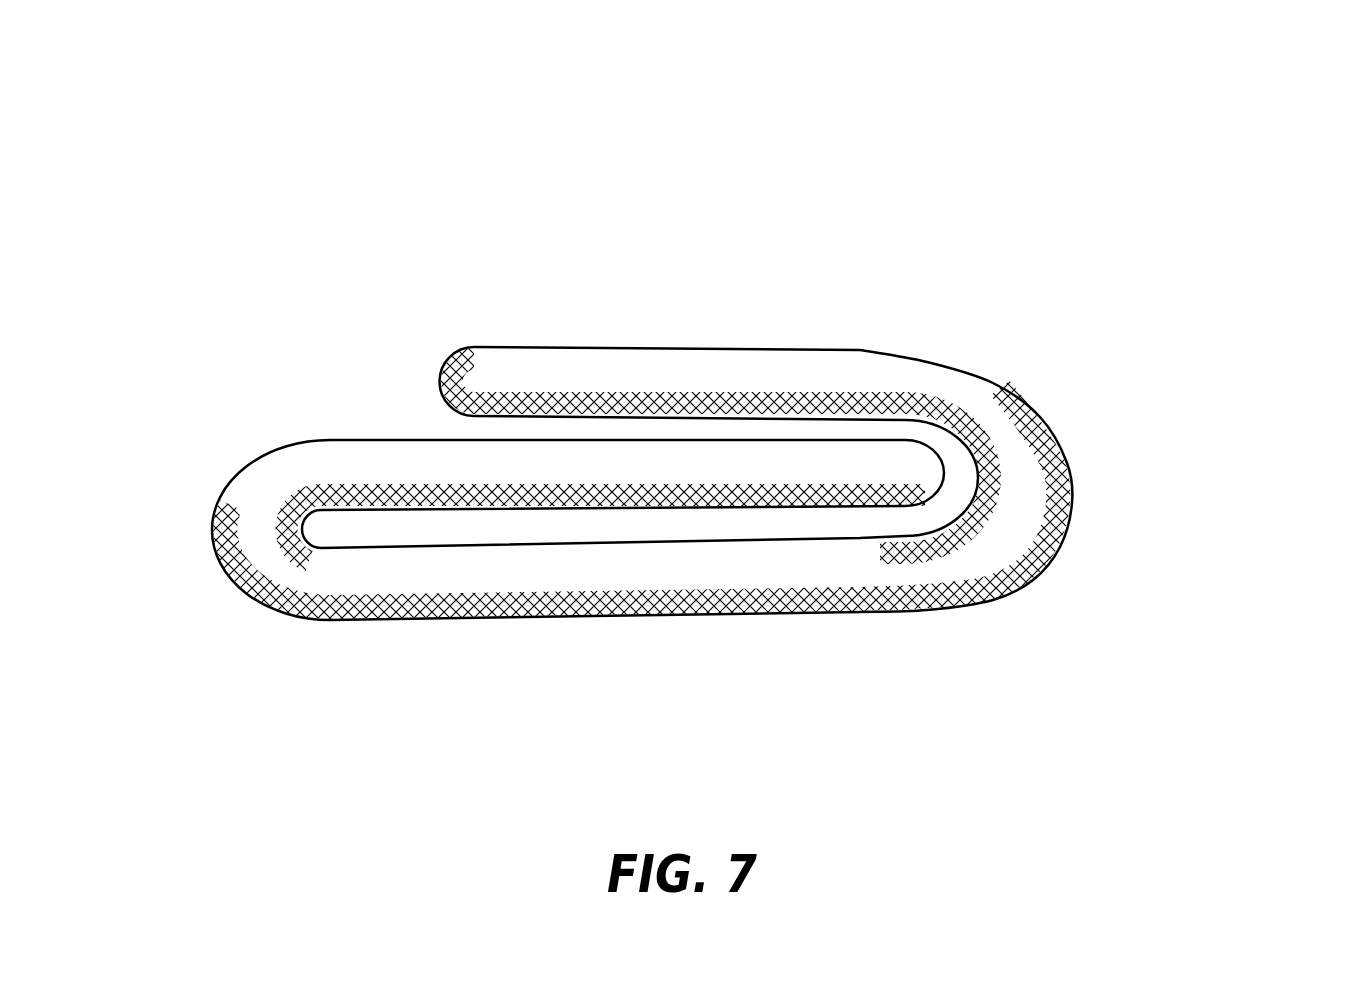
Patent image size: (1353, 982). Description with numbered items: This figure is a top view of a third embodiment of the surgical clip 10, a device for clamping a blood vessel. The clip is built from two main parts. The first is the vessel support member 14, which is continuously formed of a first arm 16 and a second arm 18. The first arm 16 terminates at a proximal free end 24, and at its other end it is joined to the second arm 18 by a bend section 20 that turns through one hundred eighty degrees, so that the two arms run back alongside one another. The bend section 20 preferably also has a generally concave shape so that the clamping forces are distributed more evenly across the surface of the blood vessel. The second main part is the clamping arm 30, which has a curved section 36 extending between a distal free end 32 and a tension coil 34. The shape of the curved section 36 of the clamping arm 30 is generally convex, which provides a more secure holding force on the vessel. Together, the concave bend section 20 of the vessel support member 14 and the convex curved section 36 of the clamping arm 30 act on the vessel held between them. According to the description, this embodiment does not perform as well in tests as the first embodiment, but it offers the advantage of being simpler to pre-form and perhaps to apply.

The surgical clip 10 is at (1097, 280).
The vessel support member 14 is at (1063, 430).
The first arm 16 is at (768, 345).
The second arm 18 is at (695, 617).
The bend section 20 is at (1075, 498).
The proximal free end 24 is at (451, 362).
The clamping arm 30 is at (851, 457).
The distal free end 32 is at (923, 495).
The tension coil 34 is at (225, 587).
The curved section 36 is at (617, 457).